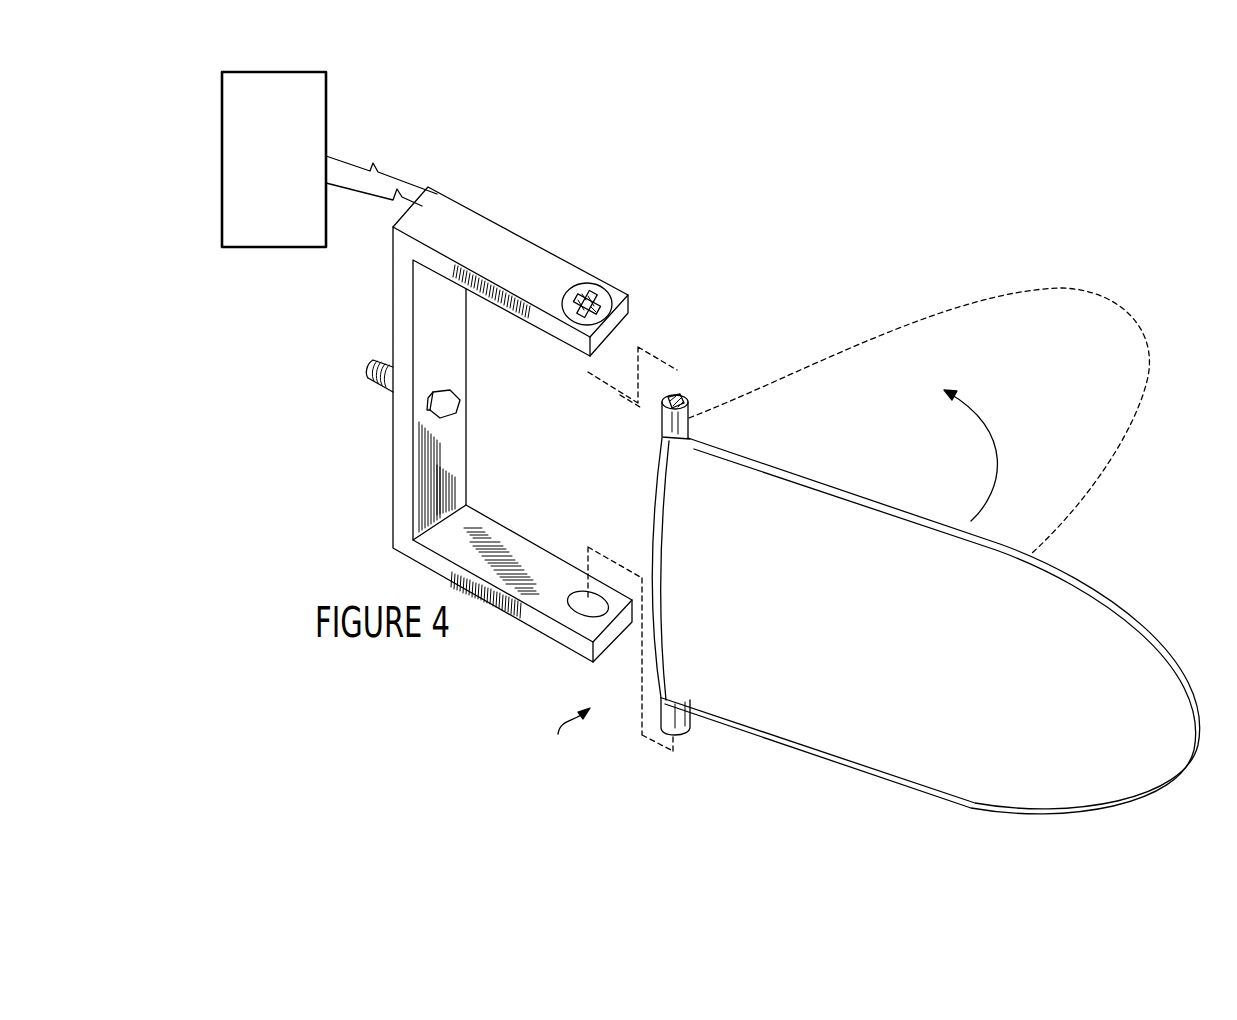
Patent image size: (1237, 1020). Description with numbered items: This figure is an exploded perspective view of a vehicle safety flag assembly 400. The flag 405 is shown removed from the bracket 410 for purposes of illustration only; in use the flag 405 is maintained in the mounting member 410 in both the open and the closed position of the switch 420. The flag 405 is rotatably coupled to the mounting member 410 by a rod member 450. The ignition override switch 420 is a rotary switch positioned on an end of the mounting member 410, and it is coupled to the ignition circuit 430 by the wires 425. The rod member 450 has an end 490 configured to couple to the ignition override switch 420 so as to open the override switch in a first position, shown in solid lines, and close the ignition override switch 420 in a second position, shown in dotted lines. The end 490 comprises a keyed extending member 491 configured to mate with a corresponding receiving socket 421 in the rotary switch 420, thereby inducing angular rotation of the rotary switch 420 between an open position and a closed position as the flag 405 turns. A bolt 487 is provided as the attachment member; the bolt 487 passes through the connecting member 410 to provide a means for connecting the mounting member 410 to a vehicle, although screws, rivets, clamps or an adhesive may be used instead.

The vehicle safety flag assembly 400 is at (565, 734).
The flag 405 is at (1098, 601).
The bracket 410 is at (477, 222).
The ignition override switch 420 is at (582, 286).
The receiving socket 421 is at (610, 315).
The wires 425 is at (378, 195).
The ignition circuit 430 is at (328, 138).
The rod member 450 is at (688, 436).
The bolt 487 is at (437, 418).
The end 490 is at (688, 408).
The keyed extending member 491 is at (683, 392).